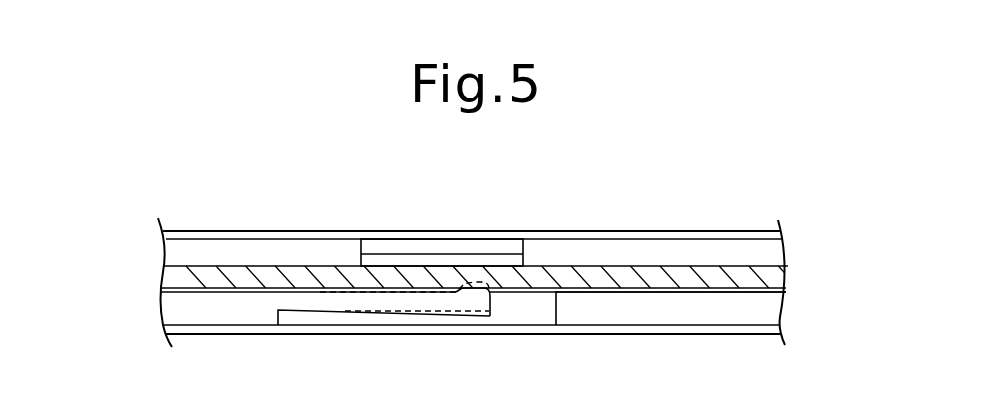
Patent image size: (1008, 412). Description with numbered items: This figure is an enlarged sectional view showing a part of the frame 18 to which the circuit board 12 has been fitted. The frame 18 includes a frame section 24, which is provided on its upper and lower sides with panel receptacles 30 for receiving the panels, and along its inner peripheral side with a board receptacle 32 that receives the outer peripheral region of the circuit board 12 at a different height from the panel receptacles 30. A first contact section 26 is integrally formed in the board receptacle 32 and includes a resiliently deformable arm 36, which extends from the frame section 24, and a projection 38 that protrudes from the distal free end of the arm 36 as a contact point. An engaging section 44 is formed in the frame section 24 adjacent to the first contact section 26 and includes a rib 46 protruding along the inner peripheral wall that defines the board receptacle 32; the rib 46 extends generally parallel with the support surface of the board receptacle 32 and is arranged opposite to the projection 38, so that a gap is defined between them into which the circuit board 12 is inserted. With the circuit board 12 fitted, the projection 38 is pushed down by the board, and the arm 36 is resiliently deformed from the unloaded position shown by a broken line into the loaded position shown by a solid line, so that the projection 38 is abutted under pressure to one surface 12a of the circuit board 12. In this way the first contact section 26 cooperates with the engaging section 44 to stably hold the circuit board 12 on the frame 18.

The circuit board 12 is at (553, 265).
The surface of the circuit board 12a is at (533, 290).
The frame 18 is at (352, 223).
The frame section 24 is at (287, 231).
The first contact section 26 is at (335, 317).
The panel receptacle 30 is at (710, 243).
The board receptacle 32 is at (213, 285).
The resiliently deformable arm 36 is at (405, 302).
The projection 38 is at (473, 293).
The engaging section 44 is at (421, 239).
The rib 46 is at (466, 262).